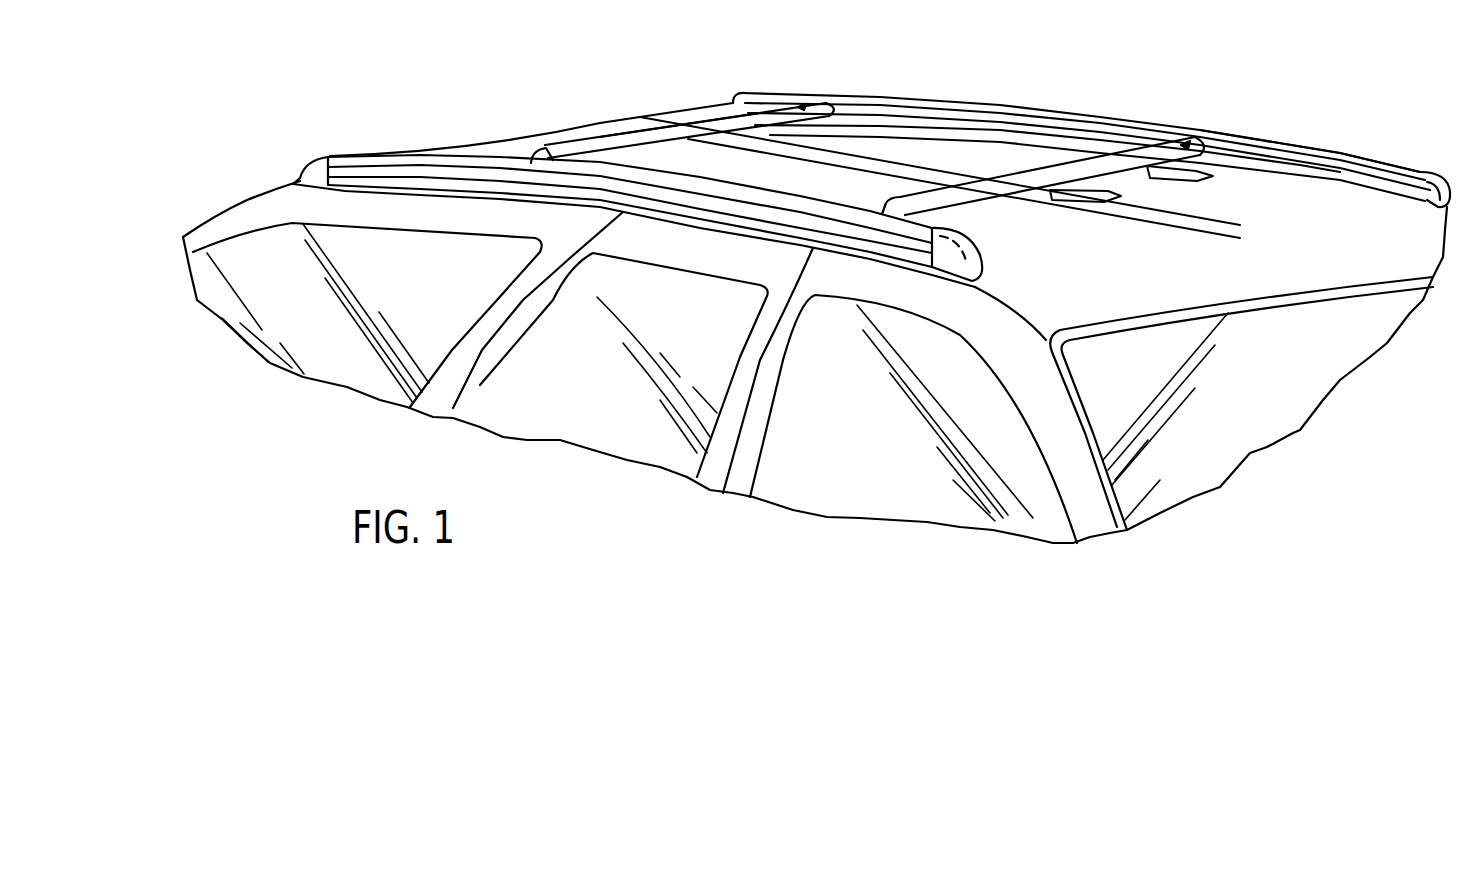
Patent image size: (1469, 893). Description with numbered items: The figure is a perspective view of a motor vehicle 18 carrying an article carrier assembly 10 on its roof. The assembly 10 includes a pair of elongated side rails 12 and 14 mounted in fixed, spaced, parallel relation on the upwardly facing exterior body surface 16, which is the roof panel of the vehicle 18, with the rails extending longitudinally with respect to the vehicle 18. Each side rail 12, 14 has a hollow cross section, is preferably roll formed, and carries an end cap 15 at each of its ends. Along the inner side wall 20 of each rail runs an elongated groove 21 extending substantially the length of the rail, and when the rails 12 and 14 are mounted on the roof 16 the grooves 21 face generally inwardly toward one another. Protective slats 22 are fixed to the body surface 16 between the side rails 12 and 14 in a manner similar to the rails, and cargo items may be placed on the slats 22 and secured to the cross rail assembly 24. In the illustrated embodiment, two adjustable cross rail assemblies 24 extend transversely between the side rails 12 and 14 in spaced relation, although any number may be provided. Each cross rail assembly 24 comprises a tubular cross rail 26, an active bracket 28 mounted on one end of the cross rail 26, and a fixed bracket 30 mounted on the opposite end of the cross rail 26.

The article carrier assembly 10 is at (1005, 96).
The side rail 12 is at (750, 226).
The side rail 14 is at (1088, 117).
The end cap 15 is at (943, 264).
The exterior body surface 16 is at (1244, 266).
The motor vehicle 18 is at (1093, 527).
The inner side wall 20 is at (1307, 177).
The elongated groove 21 is at (1335, 160).
The protective slats 22 is at (1207, 180).
The cross rail assembly 24 is at (632, 128).
The tubular cross rail 26 is at (768, 117).
The active bracket 28 is at (833, 99).
The fixed bracket 30 is at (535, 155).